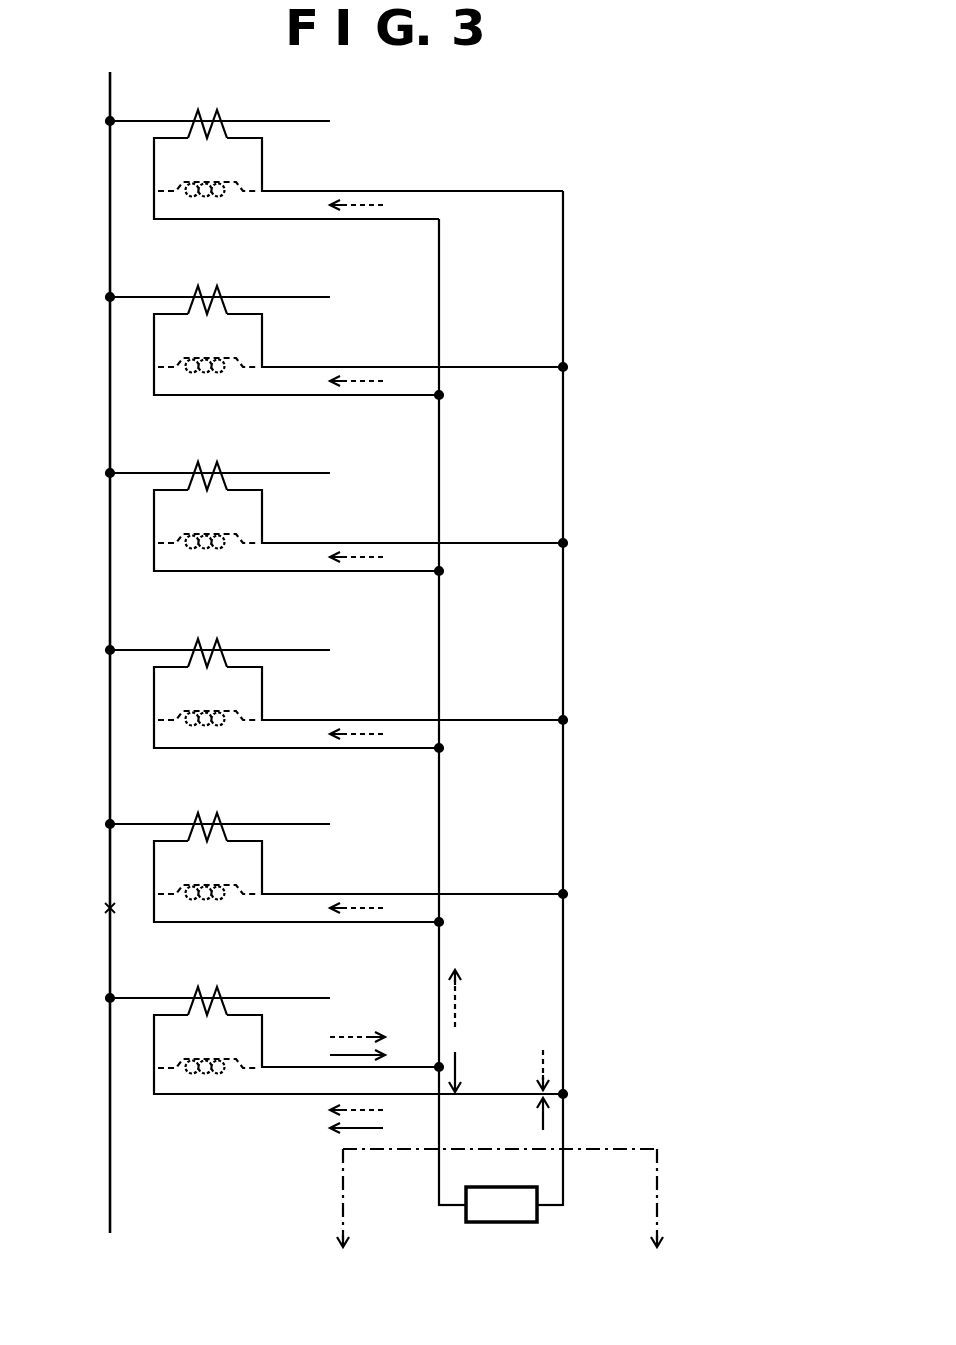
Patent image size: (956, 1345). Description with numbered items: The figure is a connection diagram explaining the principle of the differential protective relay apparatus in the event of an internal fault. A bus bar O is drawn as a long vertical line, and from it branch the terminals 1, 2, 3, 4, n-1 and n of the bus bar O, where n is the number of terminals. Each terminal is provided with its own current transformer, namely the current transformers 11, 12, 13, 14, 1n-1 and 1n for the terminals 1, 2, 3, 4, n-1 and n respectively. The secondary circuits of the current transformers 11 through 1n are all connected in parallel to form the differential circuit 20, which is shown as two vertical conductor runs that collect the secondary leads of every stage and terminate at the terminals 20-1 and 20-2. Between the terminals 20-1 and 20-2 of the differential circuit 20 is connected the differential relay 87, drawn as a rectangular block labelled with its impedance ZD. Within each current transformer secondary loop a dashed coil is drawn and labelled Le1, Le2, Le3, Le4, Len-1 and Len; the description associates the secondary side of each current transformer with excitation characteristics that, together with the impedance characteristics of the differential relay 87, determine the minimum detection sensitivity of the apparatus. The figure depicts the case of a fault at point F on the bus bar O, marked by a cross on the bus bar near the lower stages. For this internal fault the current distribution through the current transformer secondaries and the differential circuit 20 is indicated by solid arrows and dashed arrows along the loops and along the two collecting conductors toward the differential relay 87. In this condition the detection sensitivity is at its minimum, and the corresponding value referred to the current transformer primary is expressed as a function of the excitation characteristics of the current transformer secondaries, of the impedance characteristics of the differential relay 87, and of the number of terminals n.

The terminal 1 is at (230, 121).
The terminal 2 is at (230, 297).
The terminal 3 is at (230, 473).
The terminal 4 is at (230, 650).
The terminal n-1 is at (244, 824).
The terminal n is at (230, 998).
The current transformer 11 is at (217, 116).
The current transformer 12 is at (227, 285).
The current transformer 13 is at (227, 461).
The current transformer 14 is at (227, 638).
The current transformer 1n-1 is at (240, 812).
The current transformer 1n is at (227, 986).
The inductance of first line Le1 is at (213, 197).
The inductance of second line Le2 is at (207, 395).
The inductance of third line Le3 is at (207, 571).
The inductance of fourth line Le4 is at (207, 748).
The inductance of (n-1)th line Len-1 is at (207, 922).
The inductance of nth line Len is at (207, 1096).
The bus bar O is at (108, 102).
The fault point F is at (106, 908).
The differential circuit 20 is at (495, 1215).
The terminal of the differential circuit 20-1 is at (453, 1207).
The terminal of the differential circuit 20-2 is at (553, 1207).
The differential relay 87 is at (519, 1168).